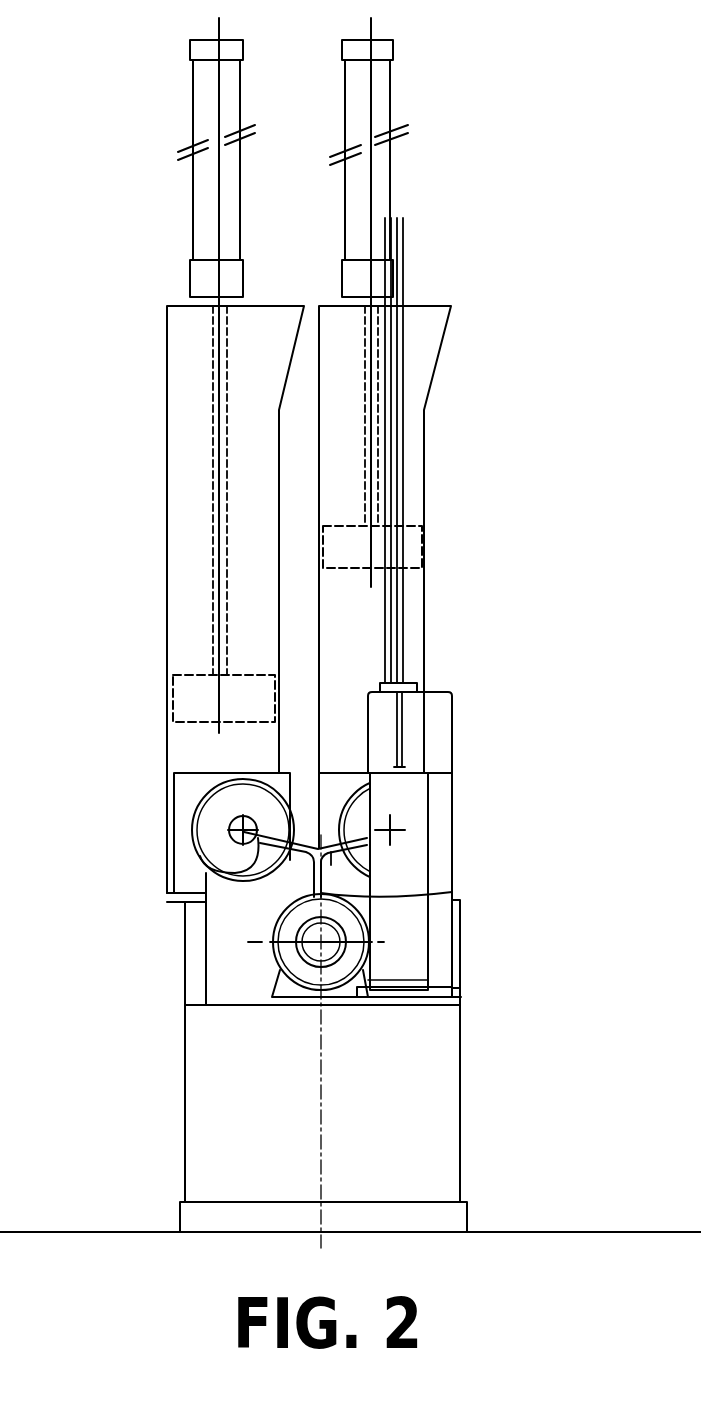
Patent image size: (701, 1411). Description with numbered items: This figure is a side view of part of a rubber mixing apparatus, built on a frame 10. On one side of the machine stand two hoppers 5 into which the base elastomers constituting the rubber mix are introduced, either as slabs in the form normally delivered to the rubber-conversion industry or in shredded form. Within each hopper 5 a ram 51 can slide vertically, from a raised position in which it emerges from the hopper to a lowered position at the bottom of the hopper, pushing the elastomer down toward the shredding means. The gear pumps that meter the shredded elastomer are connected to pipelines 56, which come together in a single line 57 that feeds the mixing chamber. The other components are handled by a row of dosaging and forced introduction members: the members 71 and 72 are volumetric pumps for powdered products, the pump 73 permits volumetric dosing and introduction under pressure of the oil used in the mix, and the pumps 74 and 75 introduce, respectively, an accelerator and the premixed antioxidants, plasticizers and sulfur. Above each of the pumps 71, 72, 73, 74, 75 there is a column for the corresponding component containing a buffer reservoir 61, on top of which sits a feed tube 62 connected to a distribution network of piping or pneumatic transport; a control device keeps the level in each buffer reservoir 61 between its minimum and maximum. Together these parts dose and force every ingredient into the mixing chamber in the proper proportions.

The hopper 5 is at (138, 513).
The frame 10 is at (232, 1115).
The ram 51 is at (190, 700).
The pipeline 56 is at (207, 871).
The single line 57 is at (313, 880).
The buffer reservoir 61 is at (451, 712).
The feed tube 62 is at (404, 291).
The dosaging and introduction member 71 is at (525, 944).
The dosaging and introduction member 72 is at (458, 943).
The pump 73 is at (450, 971).
The pump 74 is at (487, 1018).
The pump 75 is at (414, 980).